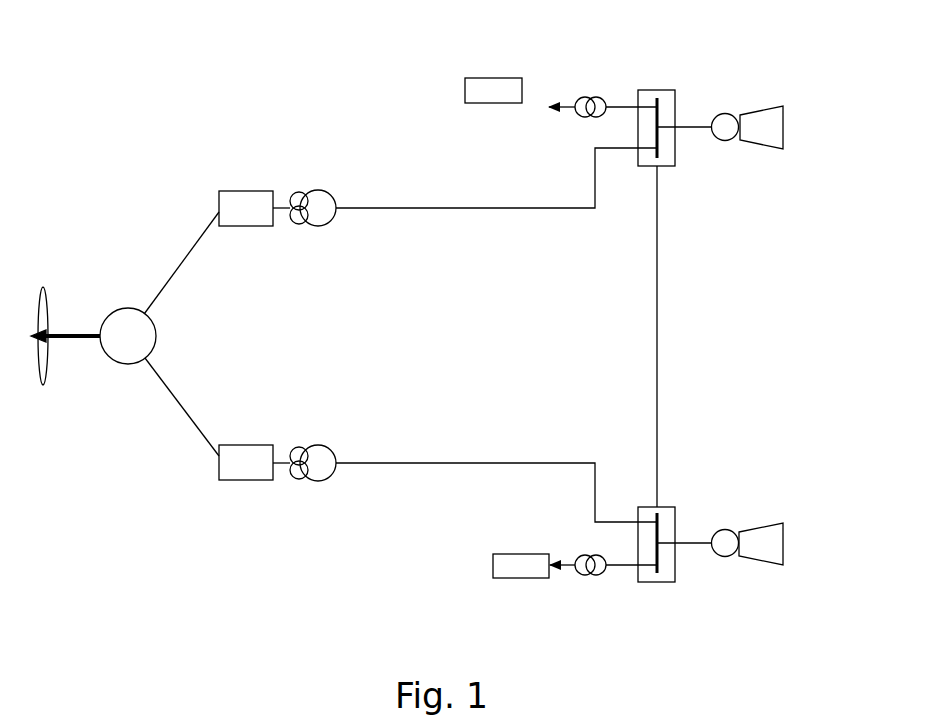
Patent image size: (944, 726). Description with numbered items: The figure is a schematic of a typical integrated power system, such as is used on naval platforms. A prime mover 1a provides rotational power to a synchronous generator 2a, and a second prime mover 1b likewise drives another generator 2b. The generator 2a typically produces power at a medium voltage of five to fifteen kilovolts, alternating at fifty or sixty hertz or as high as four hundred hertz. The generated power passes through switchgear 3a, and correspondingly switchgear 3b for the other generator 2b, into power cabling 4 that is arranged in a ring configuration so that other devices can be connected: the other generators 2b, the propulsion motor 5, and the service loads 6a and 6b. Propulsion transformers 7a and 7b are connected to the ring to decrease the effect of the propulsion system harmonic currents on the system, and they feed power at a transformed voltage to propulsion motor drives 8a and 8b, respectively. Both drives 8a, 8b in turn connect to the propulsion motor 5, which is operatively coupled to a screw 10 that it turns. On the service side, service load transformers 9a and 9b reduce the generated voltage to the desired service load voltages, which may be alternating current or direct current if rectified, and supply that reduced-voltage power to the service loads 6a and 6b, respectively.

The prime mover 1a is at (786, 113).
The prime mover 1b is at (785, 524).
The synchronous generator 2a is at (729, 111).
The generator 2b is at (728, 530).
The switchgear 3a is at (655, 90).
The switchgear 3b is at (676, 505).
The power cabling 4 is at (498, 208).
The propulsion motor 5 is at (160, 320).
The service load 6a is at (488, 103).
The service load 6b is at (487, 577).
The propulsion transformer 7a is at (322, 226).
The propulsion transformer 7b is at (331, 440).
The propulsion motor drive 8a is at (245, 191).
The propulsion motor drive 8b is at (248, 437).
The service load transformer 9a is at (588, 97).
The service load transformer 9b is at (583, 575).
The screw 10 is at (49, 294).